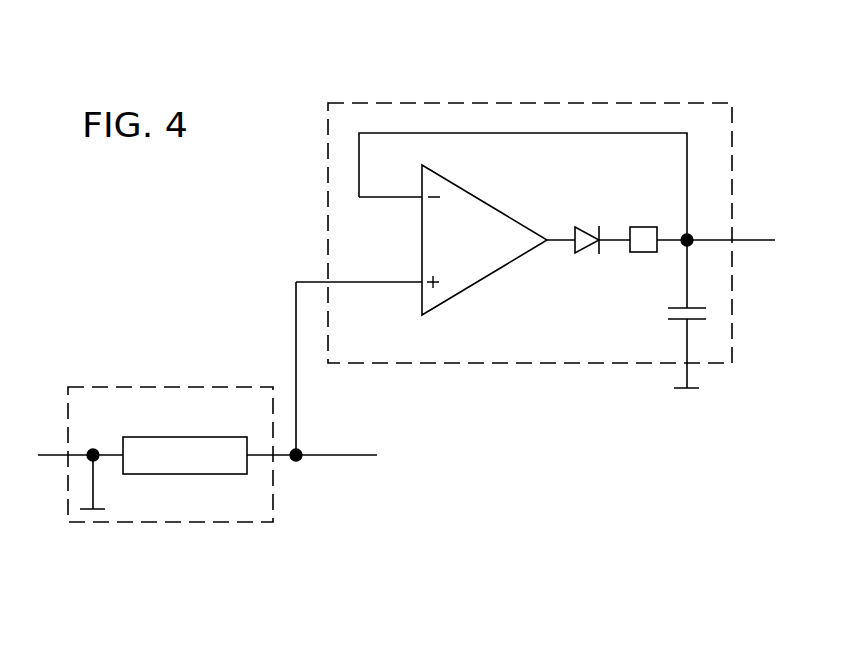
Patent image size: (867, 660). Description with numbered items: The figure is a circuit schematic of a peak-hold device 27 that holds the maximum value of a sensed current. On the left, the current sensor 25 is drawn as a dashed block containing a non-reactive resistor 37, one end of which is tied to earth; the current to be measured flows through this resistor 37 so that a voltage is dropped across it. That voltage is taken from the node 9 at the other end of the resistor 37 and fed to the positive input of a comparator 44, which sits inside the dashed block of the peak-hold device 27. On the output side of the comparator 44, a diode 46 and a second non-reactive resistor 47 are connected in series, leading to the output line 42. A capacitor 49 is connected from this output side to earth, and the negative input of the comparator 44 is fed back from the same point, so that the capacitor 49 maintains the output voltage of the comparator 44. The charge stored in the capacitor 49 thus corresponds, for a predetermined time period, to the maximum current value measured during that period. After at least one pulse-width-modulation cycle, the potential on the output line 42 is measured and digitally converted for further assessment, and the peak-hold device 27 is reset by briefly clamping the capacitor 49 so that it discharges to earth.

The peak-hold device 27 is at (655, 110).
The comparator 44 is at (475, 215).
The diode 46 is at (582, 253).
The non-reactive resistor 47 is at (648, 228).
The output line 42 is at (749, 240).
The capacitor 49 is at (705, 318).
The current sensor 25 is at (177, 515).
The non-reactive resistor 37 is at (185, 446).
The node 9 is at (325, 458).